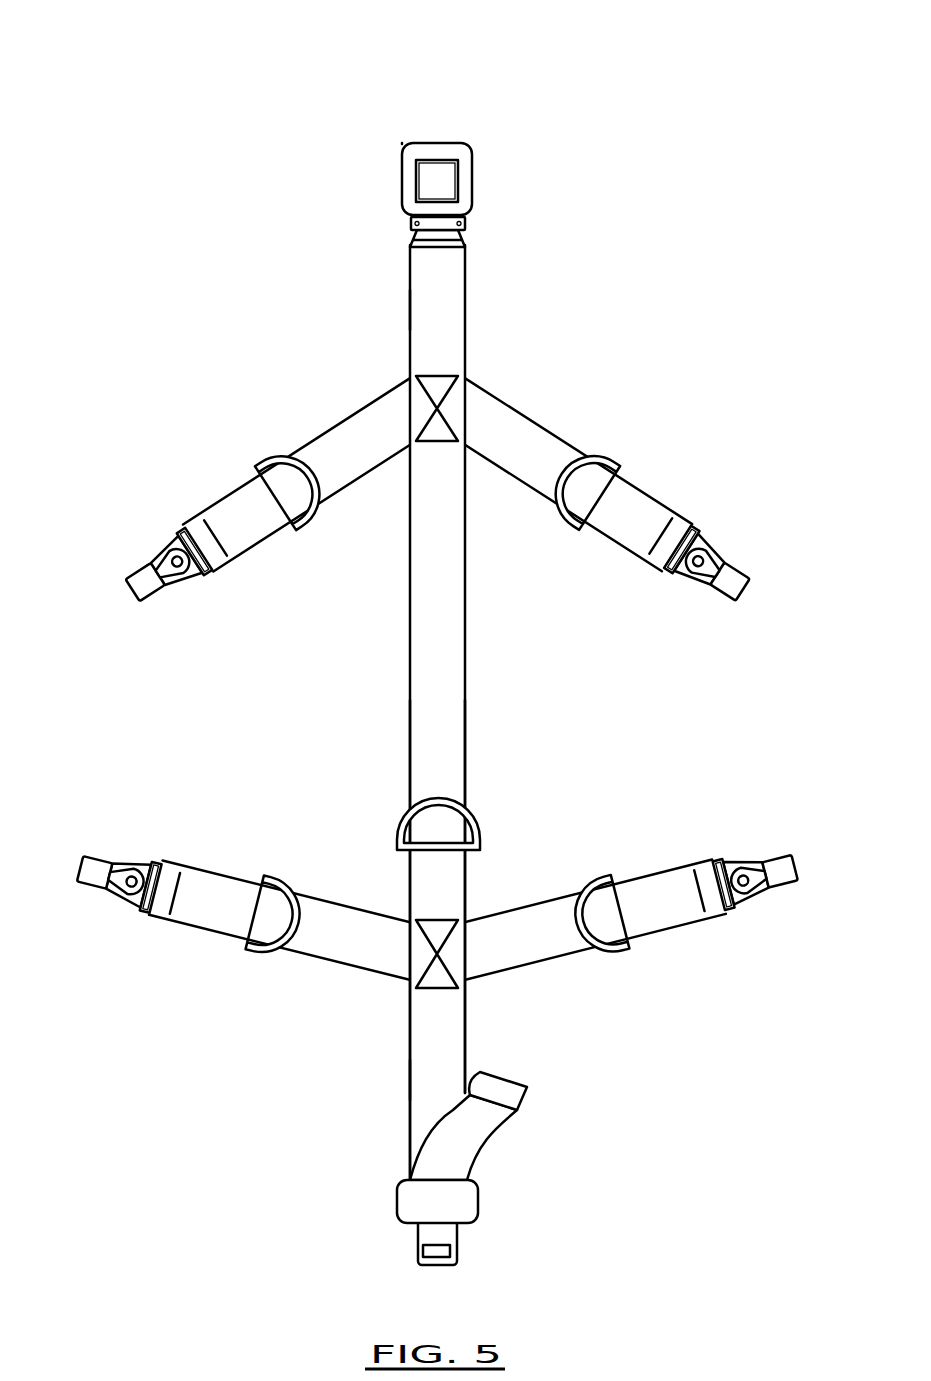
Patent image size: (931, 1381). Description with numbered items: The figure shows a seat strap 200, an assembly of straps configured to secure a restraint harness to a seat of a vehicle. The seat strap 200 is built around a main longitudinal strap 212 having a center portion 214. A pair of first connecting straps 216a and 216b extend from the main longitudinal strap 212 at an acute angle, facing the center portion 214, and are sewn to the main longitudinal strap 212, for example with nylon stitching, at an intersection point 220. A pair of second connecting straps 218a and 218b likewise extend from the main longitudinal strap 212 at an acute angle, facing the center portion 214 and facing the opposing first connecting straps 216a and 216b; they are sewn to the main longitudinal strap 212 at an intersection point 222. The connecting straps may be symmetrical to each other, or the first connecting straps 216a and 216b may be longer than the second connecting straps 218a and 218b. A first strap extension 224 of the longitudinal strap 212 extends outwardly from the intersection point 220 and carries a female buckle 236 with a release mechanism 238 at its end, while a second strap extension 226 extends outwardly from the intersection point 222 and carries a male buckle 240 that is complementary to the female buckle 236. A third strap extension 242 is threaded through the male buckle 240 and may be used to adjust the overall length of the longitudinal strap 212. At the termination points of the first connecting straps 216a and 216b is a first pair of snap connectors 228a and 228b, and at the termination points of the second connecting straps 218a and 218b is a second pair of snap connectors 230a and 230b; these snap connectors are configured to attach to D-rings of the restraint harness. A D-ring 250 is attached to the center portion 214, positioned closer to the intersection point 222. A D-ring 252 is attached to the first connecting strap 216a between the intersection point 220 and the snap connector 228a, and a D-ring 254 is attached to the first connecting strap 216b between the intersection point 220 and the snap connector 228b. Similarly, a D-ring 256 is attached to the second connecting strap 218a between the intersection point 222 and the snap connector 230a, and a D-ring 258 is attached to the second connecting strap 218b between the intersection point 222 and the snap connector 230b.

The seat strap 200 is at (226, 31).
The main longitudinal strap 212 is at (466, 309).
The center portion 214 is at (466, 696).
The first connecting strap 216a is at (690, 473).
The first connecting strap 216b is at (228, 491).
The second connecting strap 218a is at (677, 931).
The second connecting strap 218b is at (203, 929).
The intersection point 220 is at (458, 395).
The intersection point 222 is at (458, 963).
The first strap extension 224 is at (409, 309).
The second strap extension 226 is at (408, 1082).
The snap connector 228a is at (730, 567).
The snap connector 228b is at (148, 578).
The snap connector 230a is at (780, 844).
The snap connector 230b is at (127, 864).
The female buckle 236 is at (421, 143).
The release mechanism 238 is at (440, 183).
The male buckle 240 is at (397, 1203).
The third strap extension 242 is at (530, 1092).
The D-ring 250 is at (483, 836).
The D-ring 252 is at (582, 530).
The D-ring 254 is at (297, 532).
The D-ring 256 is at (623, 873).
The D-ring 258 is at (257, 873).